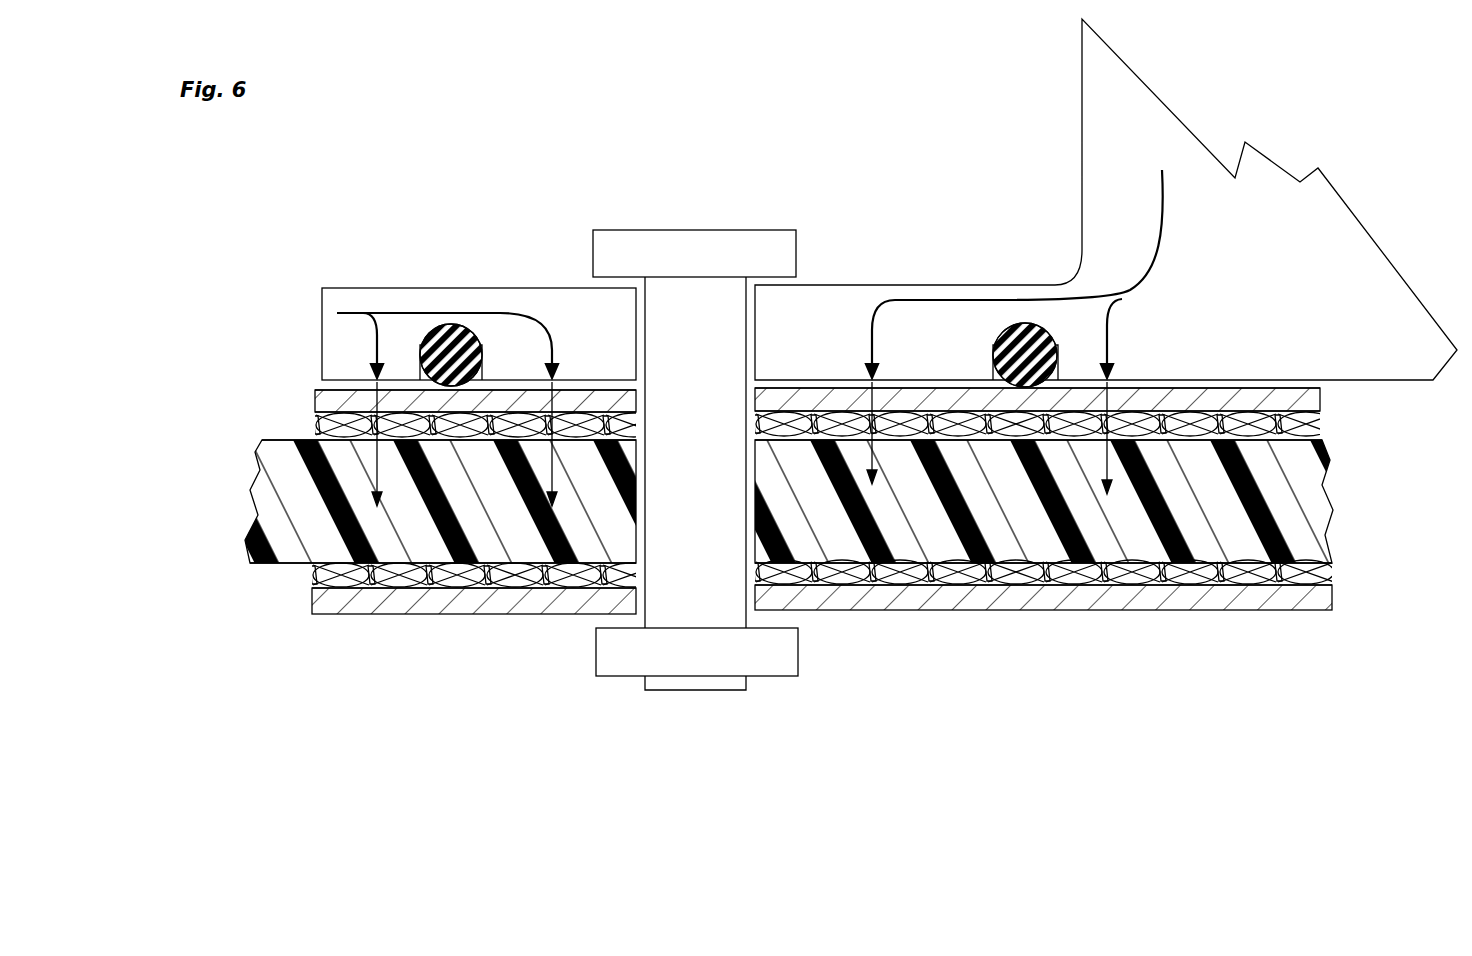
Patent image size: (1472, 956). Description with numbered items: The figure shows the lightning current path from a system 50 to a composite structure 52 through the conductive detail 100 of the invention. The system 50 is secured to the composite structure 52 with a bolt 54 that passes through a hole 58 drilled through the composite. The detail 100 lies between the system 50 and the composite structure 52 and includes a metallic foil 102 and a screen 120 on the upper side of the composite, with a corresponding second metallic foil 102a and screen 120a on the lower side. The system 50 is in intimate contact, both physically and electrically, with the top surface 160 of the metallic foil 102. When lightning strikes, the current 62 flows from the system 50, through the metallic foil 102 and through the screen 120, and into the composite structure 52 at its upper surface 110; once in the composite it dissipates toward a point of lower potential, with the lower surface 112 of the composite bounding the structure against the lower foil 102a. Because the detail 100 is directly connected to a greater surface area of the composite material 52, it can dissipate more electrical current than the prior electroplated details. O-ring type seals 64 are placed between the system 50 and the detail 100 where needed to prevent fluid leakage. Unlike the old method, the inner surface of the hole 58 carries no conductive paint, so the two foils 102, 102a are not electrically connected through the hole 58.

The system 50 is at (322, 345).
The composite structure 52 is at (248, 530).
The bolt 54 is at (688, 226).
The hole 58 is at (750, 545).
The current 62 is at (403, 312).
The O-ring type seals 64 is at (480, 355).
The detail 100 is at (825, 484).
The metallic foil 102 is at (603, 393).
The metallic foil 102a is at (372, 612).
The top surface of substrate 110 is at (262, 445).
The bottom surface of substrate 112 is at (268, 563).
The screen 120 is at (330, 442).
The bottom woven layer 120a is at (410, 580).
The top surface 160 is at (318, 392).